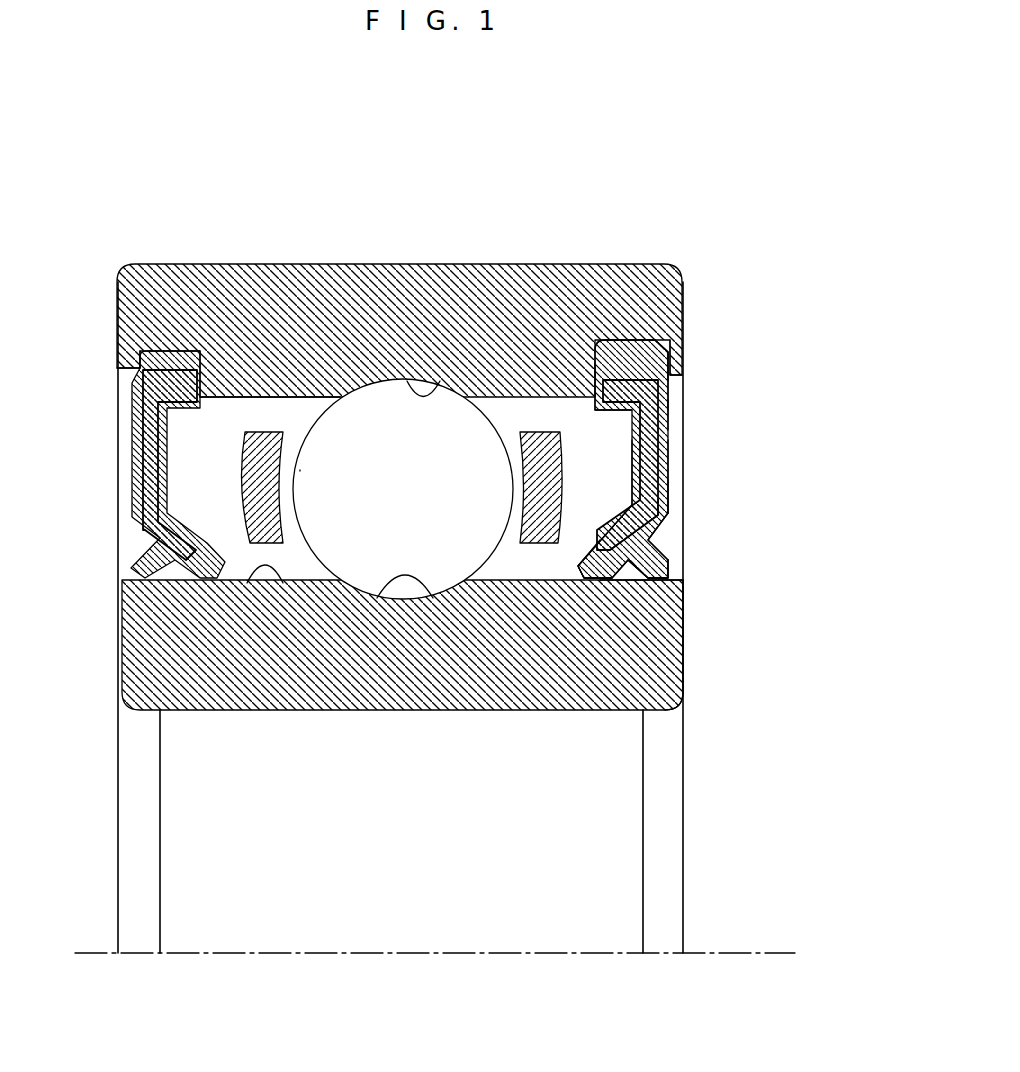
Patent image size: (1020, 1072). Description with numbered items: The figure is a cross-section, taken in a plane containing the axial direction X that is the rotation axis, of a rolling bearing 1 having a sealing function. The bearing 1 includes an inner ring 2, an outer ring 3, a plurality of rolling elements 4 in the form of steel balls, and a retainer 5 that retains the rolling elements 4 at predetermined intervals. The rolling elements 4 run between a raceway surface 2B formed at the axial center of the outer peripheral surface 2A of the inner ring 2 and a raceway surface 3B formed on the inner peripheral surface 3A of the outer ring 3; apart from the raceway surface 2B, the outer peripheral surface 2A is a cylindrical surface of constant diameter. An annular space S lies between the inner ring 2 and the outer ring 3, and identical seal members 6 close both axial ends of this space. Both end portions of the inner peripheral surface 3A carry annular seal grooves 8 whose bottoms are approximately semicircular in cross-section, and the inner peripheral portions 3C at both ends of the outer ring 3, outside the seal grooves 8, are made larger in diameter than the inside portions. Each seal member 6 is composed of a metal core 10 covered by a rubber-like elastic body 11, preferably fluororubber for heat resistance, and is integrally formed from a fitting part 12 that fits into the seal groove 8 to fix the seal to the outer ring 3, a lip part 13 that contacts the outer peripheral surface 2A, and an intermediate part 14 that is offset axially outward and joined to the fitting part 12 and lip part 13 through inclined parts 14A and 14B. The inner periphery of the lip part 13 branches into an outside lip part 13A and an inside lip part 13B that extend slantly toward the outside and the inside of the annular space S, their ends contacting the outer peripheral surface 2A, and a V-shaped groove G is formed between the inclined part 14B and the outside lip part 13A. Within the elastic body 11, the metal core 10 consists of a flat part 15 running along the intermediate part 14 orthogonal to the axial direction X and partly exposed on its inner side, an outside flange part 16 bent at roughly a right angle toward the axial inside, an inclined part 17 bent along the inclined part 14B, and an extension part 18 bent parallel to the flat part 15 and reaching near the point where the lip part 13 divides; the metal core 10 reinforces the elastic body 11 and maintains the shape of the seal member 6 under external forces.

The bearing 1 is at (736, 160).
The inner ring 2 is at (577, 690).
The outer peripheral surface 2A is at (247, 583).
The raceway surface 2B is at (377, 598).
The outer ring 3 is at (660, 290).
The inner peripheral surface 3A is at (235, 395).
The raceway surface 3B is at (412, 381).
The inner peripheral portion 3C is at (128, 375).
The rolling element 4 is at (378, 426).
The retainer 5 is at (265, 445).
The seal member 6 is at (160, 348).
The seal groove 8 is at (176, 368).
The metal core 10 is at (645, 472).
The elastic body 11 is at (670, 503).
The fitting part 12 is at (612, 345).
The lip part 13 is at (818, 570).
The outside lip part 13A is at (650, 578).
The inside lip part 13B is at (640, 583).
The intermediate part 14 is at (655, 440).
The inclined part 14A is at (675, 386).
The inclined part 14B is at (660, 528).
The flat part 15 is at (670, 416).
The outside flange part 16 is at (595, 392).
The inclined part 17 is at (597, 517).
The extension part 18 is at (640, 584).
The annular space S is at (510, 417).
The V-shaped groove G is at (664, 553).
The axial direction X is at (742, 950).